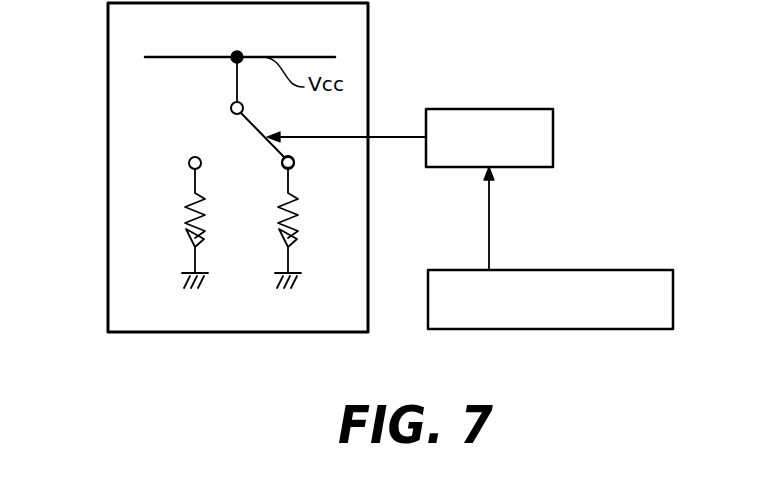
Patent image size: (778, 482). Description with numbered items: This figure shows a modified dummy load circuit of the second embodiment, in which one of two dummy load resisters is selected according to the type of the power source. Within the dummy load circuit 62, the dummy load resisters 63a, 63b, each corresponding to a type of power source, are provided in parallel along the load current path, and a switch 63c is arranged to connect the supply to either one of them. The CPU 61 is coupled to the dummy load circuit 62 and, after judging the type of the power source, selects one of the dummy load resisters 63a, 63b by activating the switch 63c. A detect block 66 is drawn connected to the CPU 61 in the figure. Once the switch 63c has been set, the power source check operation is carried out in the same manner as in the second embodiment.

The CPU 61 is at (508, 109).
The dummy load circuit 62 is at (108, 31).
The dummy load resister 63a is at (185, 230).
The dummy load resister 63b is at (278, 230).
The switch 63c is at (260, 135).
The detection circuit 66 is at (613, 270).